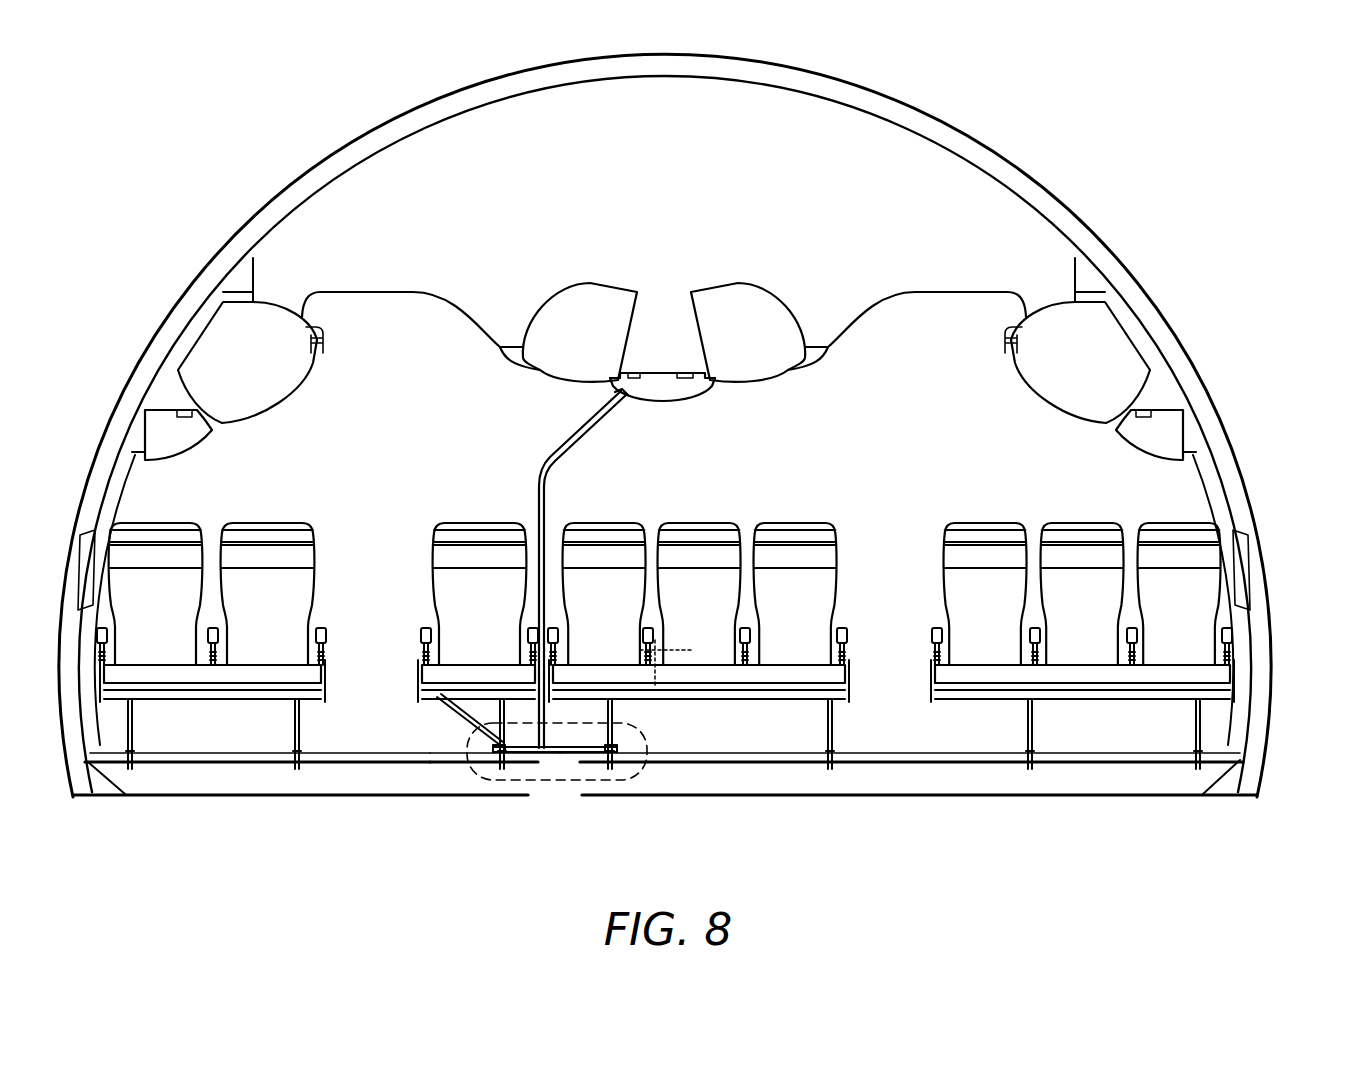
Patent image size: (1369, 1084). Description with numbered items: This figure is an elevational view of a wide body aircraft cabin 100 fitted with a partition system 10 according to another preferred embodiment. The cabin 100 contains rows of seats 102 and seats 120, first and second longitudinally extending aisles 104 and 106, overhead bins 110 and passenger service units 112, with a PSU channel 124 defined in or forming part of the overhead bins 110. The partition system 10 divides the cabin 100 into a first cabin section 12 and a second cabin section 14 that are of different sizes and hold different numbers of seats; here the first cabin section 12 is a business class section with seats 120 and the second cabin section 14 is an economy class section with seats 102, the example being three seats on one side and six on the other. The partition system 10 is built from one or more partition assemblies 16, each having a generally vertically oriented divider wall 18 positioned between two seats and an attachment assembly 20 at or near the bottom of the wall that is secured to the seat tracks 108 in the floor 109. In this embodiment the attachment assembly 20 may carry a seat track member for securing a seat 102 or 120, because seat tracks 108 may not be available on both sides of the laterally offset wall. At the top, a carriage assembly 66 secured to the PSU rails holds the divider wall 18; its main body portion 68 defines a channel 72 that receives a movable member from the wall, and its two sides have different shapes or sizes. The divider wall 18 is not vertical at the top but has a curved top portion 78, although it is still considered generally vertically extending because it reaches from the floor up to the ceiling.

The partition system 10 is at (536, 460).
The first cabin section 12 is at (368, 446).
The second cabin section 14 is at (878, 446).
The partition assembly 16 is at (532, 499).
The divider wall 18 is at (546, 508).
The attachment assembly 20 is at (536, 788).
The carriage assembly 66 is at (702, 421).
The main body portion 68 is at (620, 398).
The channel 72 is at (631, 398).
The top portion 78 is at (591, 446).
The aircraft cabin 100 is at (1108, 252).
The seats 102 is at (1192, 597).
The first aisle 104 is at (327, 725).
The second aisle 106 is at (787, 737).
The seat tracks 108 is at (498, 765).
The floor 109 is at (407, 745).
The overhead bins 110 is at (272, 385).
The passenger service units 112 is at (177, 440).
The seats 120 is at (473, 652).
The PSU channel 124 is at (674, 384).